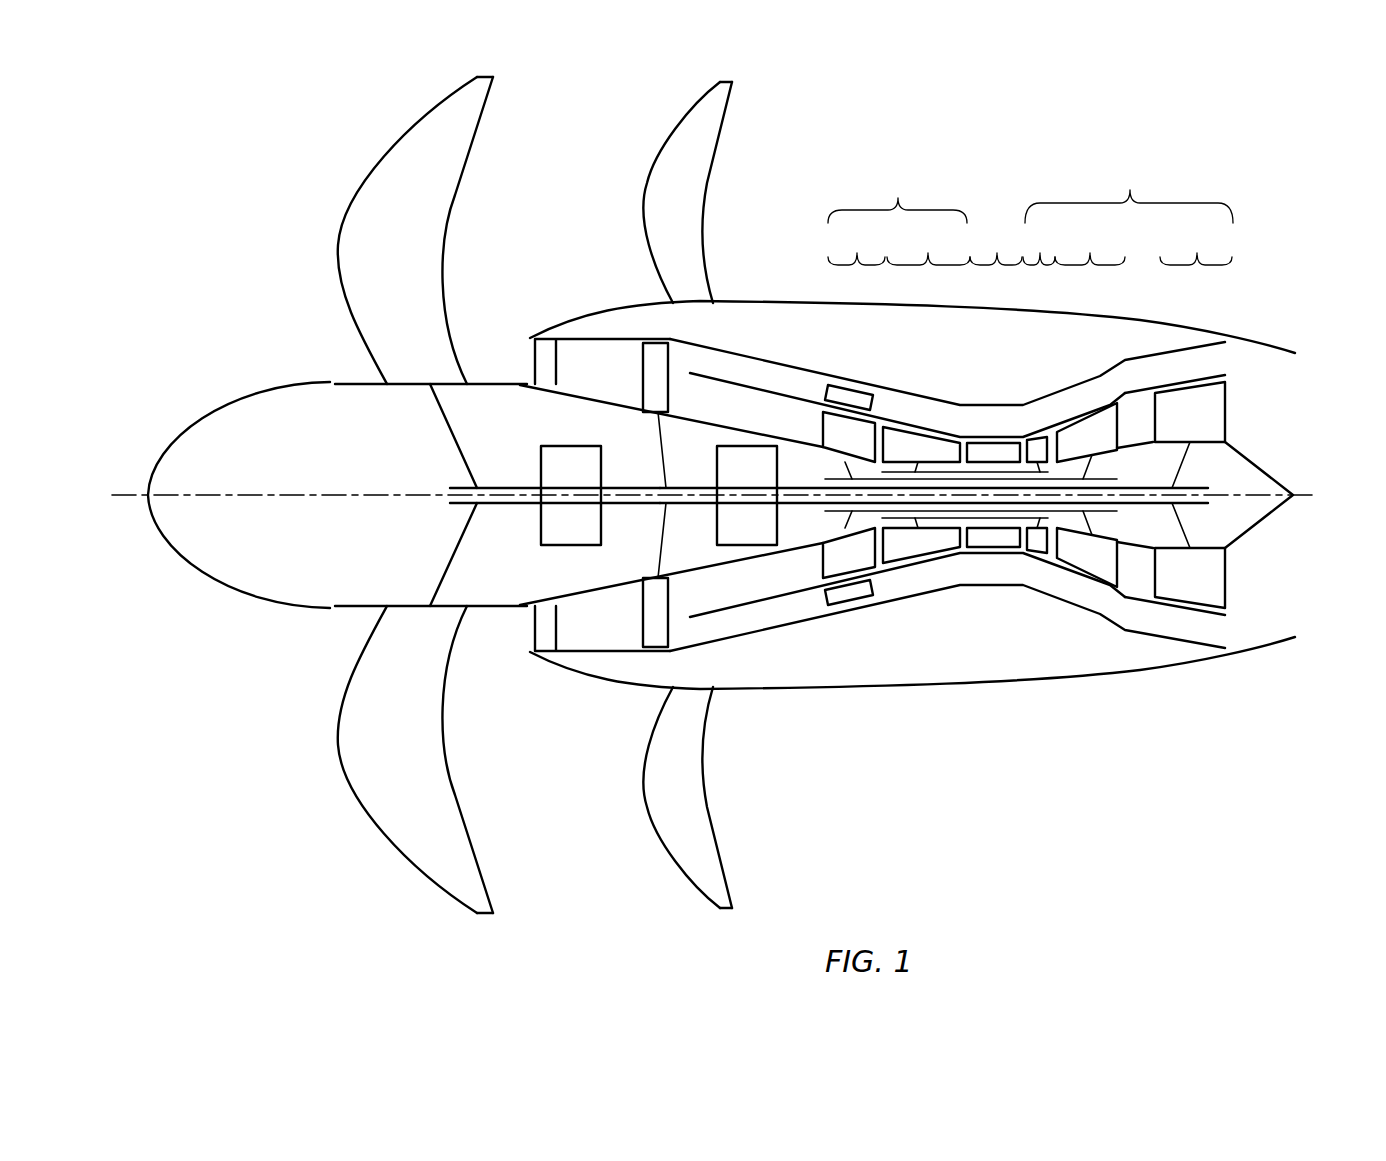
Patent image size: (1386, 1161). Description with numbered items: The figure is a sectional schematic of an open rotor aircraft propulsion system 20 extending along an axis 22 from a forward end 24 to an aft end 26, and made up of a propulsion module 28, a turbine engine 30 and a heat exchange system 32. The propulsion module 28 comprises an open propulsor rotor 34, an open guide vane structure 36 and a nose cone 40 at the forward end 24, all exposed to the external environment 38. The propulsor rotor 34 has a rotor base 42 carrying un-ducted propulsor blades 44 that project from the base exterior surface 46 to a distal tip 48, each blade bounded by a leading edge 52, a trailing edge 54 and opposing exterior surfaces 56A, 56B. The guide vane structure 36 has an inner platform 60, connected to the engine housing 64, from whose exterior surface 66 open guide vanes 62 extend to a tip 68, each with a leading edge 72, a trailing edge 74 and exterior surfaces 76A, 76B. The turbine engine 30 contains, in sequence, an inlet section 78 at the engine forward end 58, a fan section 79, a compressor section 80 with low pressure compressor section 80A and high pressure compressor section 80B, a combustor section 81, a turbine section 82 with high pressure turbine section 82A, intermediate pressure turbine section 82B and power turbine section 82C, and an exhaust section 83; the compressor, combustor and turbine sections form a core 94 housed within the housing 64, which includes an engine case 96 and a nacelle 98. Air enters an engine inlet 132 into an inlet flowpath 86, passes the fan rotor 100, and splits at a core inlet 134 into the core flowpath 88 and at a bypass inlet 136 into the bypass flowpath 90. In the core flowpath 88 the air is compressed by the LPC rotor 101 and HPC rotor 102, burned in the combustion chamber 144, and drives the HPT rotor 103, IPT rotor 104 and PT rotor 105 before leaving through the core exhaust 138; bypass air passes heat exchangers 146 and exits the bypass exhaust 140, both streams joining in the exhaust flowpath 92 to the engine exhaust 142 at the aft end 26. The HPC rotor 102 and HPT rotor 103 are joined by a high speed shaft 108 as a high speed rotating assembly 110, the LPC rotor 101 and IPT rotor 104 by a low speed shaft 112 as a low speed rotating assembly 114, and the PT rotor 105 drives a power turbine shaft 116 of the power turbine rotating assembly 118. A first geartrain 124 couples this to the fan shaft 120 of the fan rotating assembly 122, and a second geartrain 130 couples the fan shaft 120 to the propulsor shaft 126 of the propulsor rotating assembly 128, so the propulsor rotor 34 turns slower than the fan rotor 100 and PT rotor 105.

The propulsion system 20 is at (105, 103).
The axis 22 is at (118, 495).
The forward end 24 is at (148, 497).
The aft end 26 is at (1280, 497).
The propulsion module 28 is at (330, 92).
The turbine engine 30 is at (885, 745).
The heat exchange system 32 is at (868, 378).
The propulsor rotor 34 is at (328, 207).
The guide vane structure 36 is at (625, 200).
The environment 38 is at (78, 257).
The nose cone 40 is at (208, 420).
The rotor base 42 is at (440, 415).
The propulsor blades 44 is at (333, 262).
The exterior surface 46 is at (352, 382).
The distal tip 48 is at (492, 78).
The leading edge 52 is at (358, 178).
The trailing edge 54 is at (458, 195).
The first blade exterior surface 56A is at (411, 219).
The second blade exterior surface 56B is at (373, 768).
The engine forward end 58 is at (530, 338).
The inner platform 60 is at (705, 303).
The guide vanes 62 is at (637, 167).
The housing 64 is at (945, 700).
The exterior surface 66 is at (695, 303).
The distal tip 68 is at (732, 82).
The leading edge 72 is at (640, 227).
The trailing edge 74 is at (703, 233).
The first vane exterior surface 76A is at (678, 179).
The second vane exterior surface 76B is at (653, 803).
The inlet section 78 is at (588, 325).
The fan section 79 is at (645, 325).
The compressor section 80 is at (899, 367).
The low pressure compressor section 80A is at (856, 246).
The high pressure compressor section 80B is at (928, 246).
The combustor section 81 is at (993, 387).
The turbine section 82 is at (1142, 386).
The high pressure turbine section 82A is at (1018, 390).
The intermediate pressure turbine section 82B is at (1084, 407).
The power turbine section 82C is at (1213, 418).
The exhaust section 83 is at (1292, 343).
The inlet flowpath 86 is at (582, 381).
The core flowpath 88 is at (736, 420).
The bypass flowpath 90 is at (729, 383).
The exhaust flowpath 92 is at (1252, 426).
The core 94 is at (1007, 190).
The engine case 96 is at (815, 618).
The nacelle 98 is at (828, 690).
The fan rotor 100 is at (657, 435).
The LPC rotor 101 is at (822, 428).
The HPC rotor 102 is at (908, 427).
The HPT rotor 103 is at (1037, 440).
The IPT rotor 104 is at (1095, 413).
The PT rotor 105 is at (1192, 382).
The high speed shaft 108 is at (1007, 520).
The high speed rotating assembly 110 is at (1037, 555).
The low speed shaft 112 is at (1073, 513).
The low speed rotating assembly 114 is at (1105, 592).
The power turbine shaft 116 is at (1127, 507).
The power turbine rotating assembly 118 is at (1228, 558).
The fan shaft 120 is at (708, 457).
The fan rotating assembly 122 is at (628, 397).
The first geartrain 124 is at (724, 483).
The propulsor shaft 126 is at (518, 487).
The propulsor rotating assembly 128 is at (452, 465).
The second geartrain 130 is at (548, 483).
The airflow inlet 132 is at (525, 363).
The airflow inlet 134 is at (690, 395).
The airflow inlet 136 is at (690, 357).
The core exhaust 138 is at (1227, 393).
The bypass exhaust 140 is at (1222, 360).
The exhaust 142 is at (1293, 442).
The combustion chamber 144 is at (987, 443).
The heat exchangers 146 is at (838, 380).